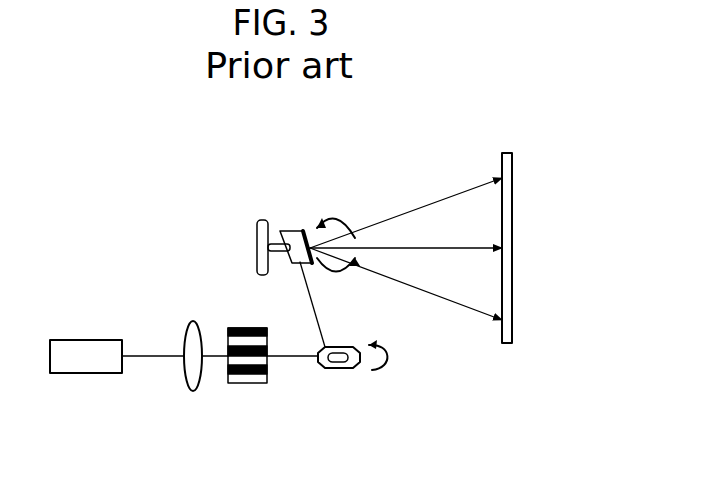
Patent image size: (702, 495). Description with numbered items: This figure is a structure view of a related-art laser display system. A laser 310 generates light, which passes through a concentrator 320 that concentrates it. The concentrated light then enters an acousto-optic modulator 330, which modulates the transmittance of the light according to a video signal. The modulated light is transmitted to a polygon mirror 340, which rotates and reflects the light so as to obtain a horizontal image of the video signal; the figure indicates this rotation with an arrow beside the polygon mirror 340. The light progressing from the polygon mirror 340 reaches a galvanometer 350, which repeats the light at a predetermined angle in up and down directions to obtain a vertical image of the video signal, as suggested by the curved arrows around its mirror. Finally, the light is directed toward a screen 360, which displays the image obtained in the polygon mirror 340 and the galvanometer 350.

The laser 310 is at (107, 373).
The concentrator 320 is at (192, 391).
The acousto-optic modulator 330 is at (255, 383).
The polygon mirror 340 is at (338, 368).
The galvanometer 350 is at (290, 230).
The screen 360 is at (512, 295).